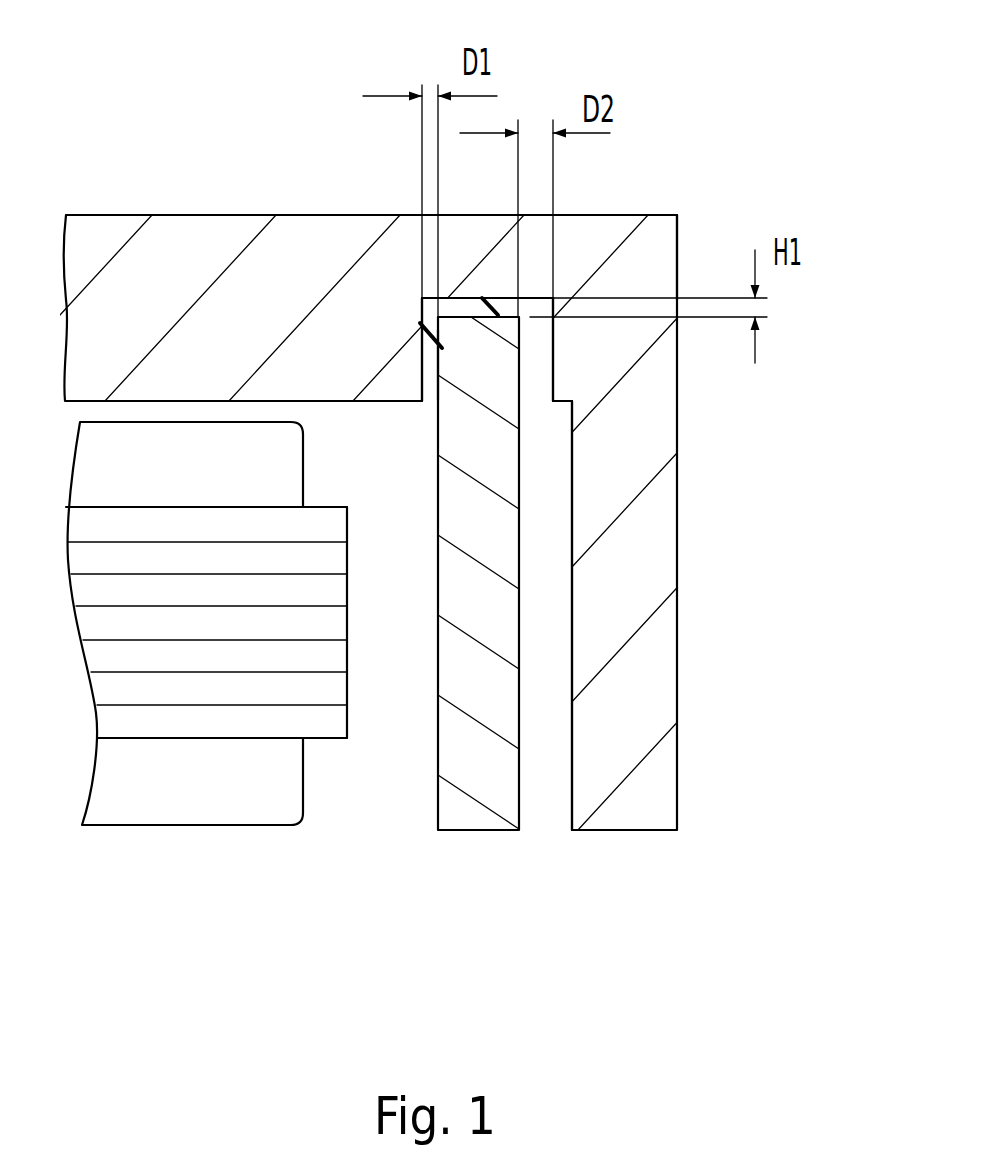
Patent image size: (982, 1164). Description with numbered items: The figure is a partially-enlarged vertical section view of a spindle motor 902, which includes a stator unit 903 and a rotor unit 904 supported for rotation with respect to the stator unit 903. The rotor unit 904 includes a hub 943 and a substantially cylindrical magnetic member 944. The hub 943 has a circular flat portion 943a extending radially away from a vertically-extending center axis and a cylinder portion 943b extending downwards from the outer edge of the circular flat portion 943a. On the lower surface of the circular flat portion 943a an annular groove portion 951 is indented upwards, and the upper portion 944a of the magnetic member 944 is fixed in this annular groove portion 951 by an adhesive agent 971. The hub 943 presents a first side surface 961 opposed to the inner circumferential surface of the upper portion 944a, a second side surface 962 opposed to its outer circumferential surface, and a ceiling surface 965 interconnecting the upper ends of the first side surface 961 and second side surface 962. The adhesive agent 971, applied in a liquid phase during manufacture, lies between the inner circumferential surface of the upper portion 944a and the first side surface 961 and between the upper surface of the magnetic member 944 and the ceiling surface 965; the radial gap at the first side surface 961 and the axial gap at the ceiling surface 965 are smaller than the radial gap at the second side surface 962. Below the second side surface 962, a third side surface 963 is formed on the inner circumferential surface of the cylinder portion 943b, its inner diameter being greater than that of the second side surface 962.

The spindle motor 902 is at (122, 142).
The stator unit 903 is at (157, 862).
The rotor unit 904 is at (648, 170).
The hub 943 is at (722, 737).
The circular flat portion 943a is at (232, 232).
The cylinder portion 943b is at (656, 568).
The magnetic member 944 is at (463, 852).
The upper portion of the magnetic member 944a is at (470, 358).
The annular groove portion 951 is at (497, 372).
The first side surface 961 is at (470, 296).
The second side surface 962 is at (556, 381).
The third side surface 963 is at (572, 772).
The ceiling surface 965 is at (467, 312).
The adhesive agent 971 is at (421, 318).